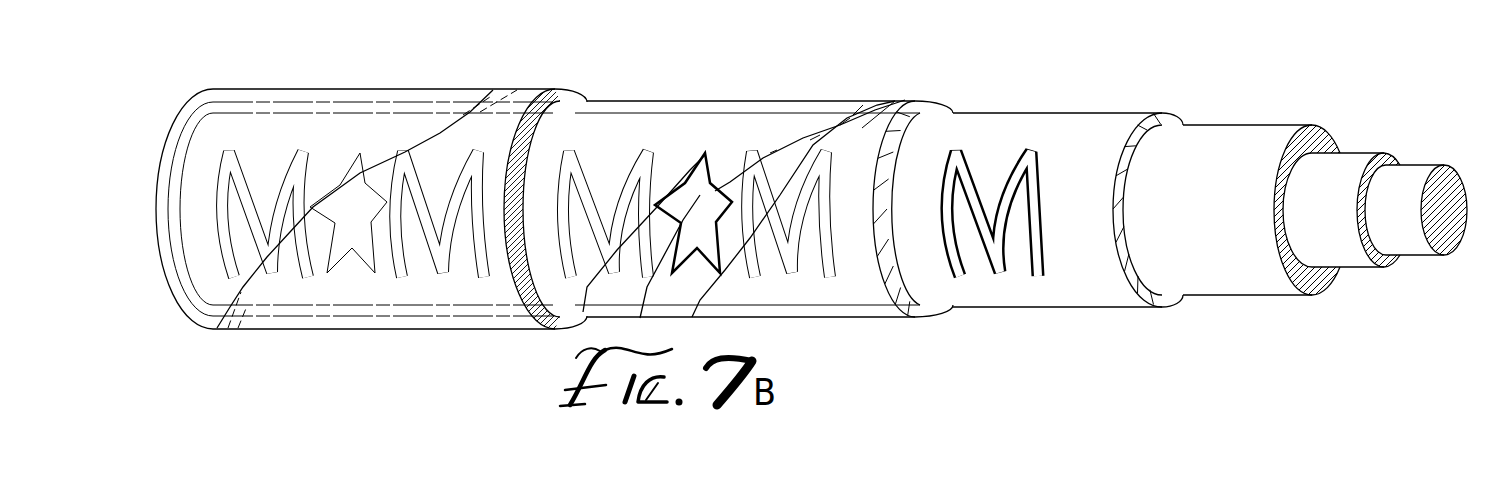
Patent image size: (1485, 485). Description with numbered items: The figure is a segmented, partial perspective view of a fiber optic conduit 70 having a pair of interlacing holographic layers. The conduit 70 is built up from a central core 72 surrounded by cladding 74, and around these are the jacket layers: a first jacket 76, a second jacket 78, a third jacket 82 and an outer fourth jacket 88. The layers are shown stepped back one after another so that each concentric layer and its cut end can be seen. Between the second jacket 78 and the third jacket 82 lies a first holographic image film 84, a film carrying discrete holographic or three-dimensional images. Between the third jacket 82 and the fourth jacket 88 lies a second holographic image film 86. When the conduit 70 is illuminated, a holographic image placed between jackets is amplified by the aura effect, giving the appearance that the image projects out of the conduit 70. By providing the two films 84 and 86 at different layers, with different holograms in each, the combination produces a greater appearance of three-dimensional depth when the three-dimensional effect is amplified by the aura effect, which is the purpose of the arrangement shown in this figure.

The fiber optic conduit 70 is at (813, 203).
The core 72 is at (1450, 193).
The cladding 74 is at (1383, 155).
The first jacket layer 76 is at (1313, 125).
The second jacket layer 78 is at (1157, 113).
The third jacket layer 82 is at (930, 100).
The first holographic image film 84 is at (1010, 182).
The second holographic image film 86 is at (690, 172).
The fourth jacket layer 88 is at (570, 90).